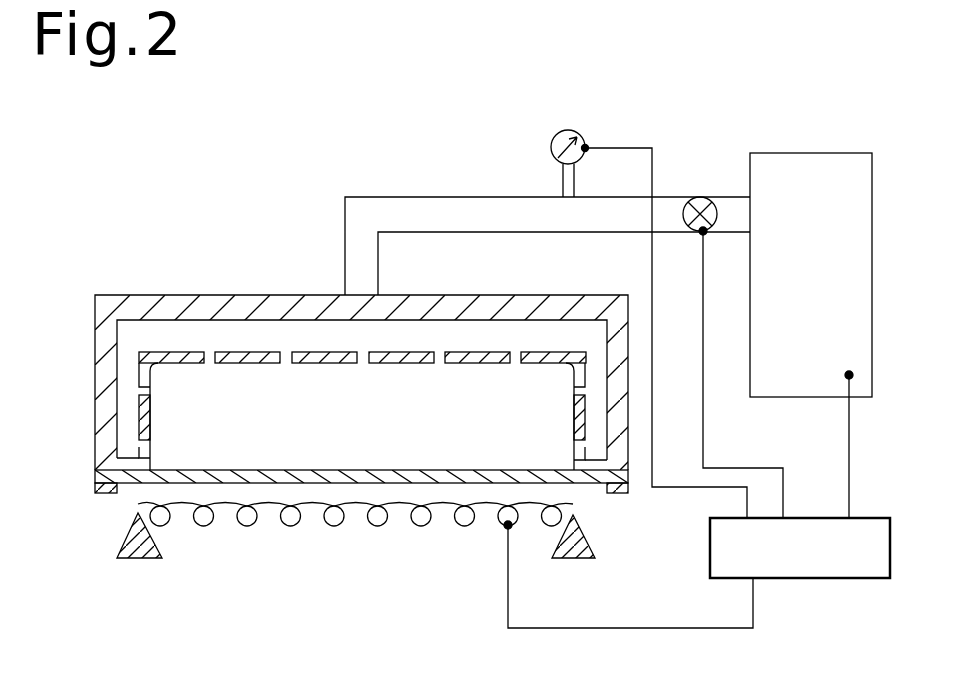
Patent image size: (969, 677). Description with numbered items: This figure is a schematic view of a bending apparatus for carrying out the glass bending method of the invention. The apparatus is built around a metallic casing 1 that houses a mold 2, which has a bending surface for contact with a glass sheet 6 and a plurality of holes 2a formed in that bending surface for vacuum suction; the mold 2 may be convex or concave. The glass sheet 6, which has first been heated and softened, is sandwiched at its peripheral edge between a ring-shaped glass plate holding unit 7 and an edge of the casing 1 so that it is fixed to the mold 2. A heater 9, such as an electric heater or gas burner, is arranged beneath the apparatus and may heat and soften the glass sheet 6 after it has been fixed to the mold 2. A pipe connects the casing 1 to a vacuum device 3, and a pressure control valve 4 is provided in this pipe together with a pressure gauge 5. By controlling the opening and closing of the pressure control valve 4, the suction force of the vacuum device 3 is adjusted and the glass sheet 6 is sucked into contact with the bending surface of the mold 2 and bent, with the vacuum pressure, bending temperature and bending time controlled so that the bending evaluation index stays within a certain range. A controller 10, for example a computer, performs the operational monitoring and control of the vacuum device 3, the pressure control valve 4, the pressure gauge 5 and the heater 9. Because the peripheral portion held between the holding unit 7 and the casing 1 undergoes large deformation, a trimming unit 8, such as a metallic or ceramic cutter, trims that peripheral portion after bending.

The metallic casing 1 is at (203, 312).
The mold 2 is at (362, 411).
The holes 2a is at (283, 363).
The vacuum device 3 is at (827, 372).
The pressure control valve 4 is at (698, 208).
The pressure gauge 5 is at (568, 133).
The glass sheet 6 is at (503, 477).
The glass plate holding unit 7 is at (103, 493).
The trimming unit 8 is at (148, 558).
The heater 9 is at (287, 525).
The controller 10 is at (835, 580).